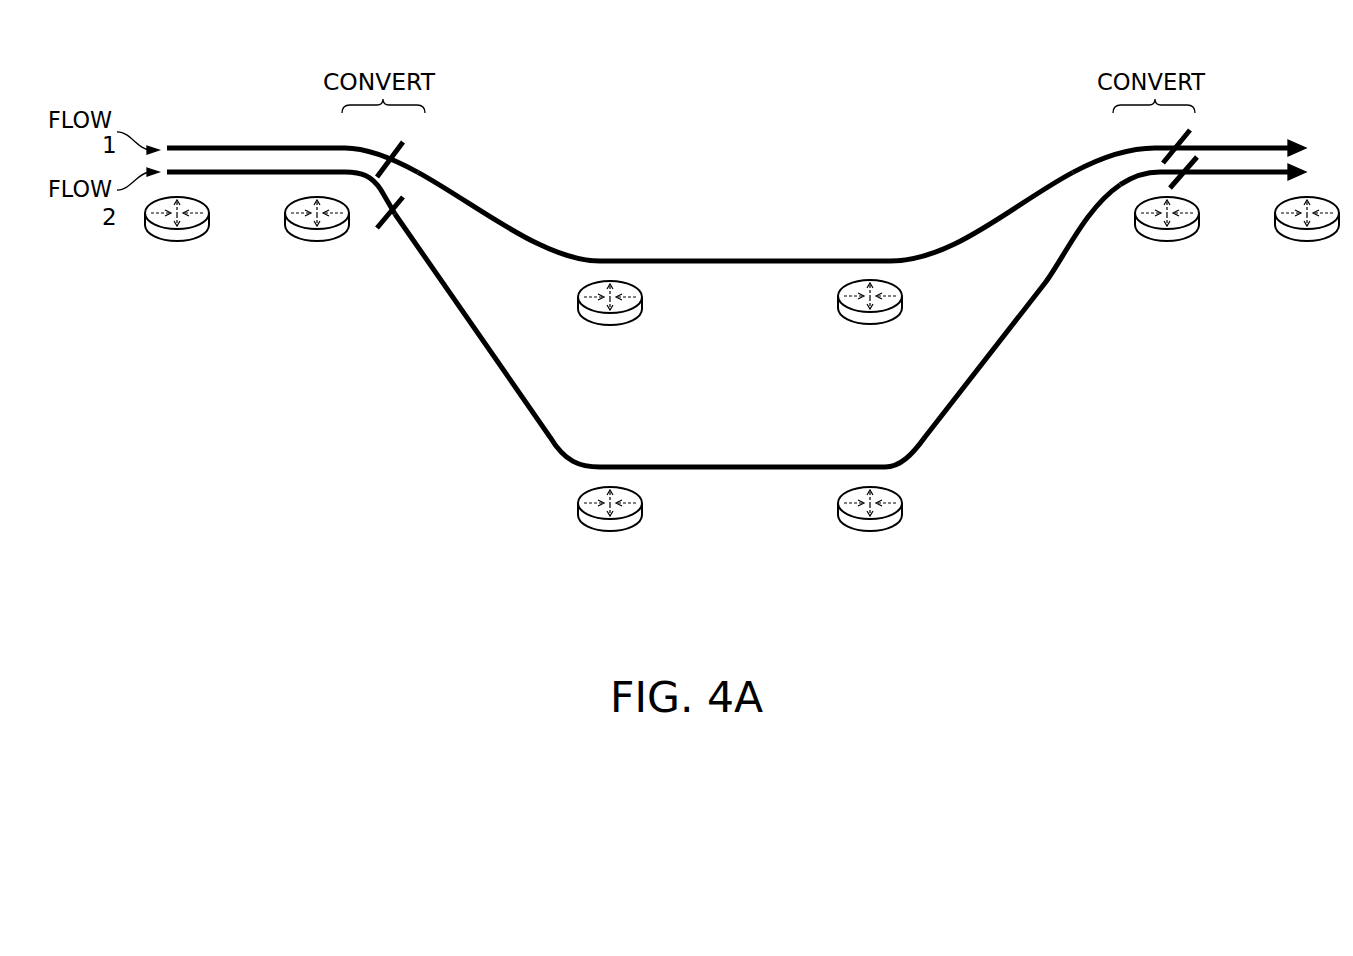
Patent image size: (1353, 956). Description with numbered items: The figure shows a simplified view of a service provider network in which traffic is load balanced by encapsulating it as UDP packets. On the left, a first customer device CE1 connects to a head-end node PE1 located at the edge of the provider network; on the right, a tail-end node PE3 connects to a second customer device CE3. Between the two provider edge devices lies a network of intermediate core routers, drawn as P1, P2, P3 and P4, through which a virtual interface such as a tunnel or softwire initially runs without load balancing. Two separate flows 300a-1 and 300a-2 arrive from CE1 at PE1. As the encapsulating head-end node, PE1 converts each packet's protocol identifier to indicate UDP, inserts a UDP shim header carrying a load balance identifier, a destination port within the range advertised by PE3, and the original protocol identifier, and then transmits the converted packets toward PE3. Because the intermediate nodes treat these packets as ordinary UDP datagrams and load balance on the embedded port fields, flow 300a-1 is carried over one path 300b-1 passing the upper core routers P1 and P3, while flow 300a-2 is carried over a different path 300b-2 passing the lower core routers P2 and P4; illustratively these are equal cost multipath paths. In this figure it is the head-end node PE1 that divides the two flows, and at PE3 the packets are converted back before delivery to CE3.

The flow 300a-1 is at (263, 138).
The flow 300a-2 is at (247, 190).
The path 300b-1 is at (735, 252).
The path 300b-2 is at (737, 482).
The customer edge device CE1 is at (175, 240).
The provider edge device PE1 is at (313, 240).
The provider device P1 is at (608, 325).
The provider device P2 is at (610, 533).
The provider device P3 is at (877, 323).
The provider device P4 is at (873, 533).
The provider edge device PE3 is at (1165, 240).
The customer edge device CE3 is at (1303, 240).